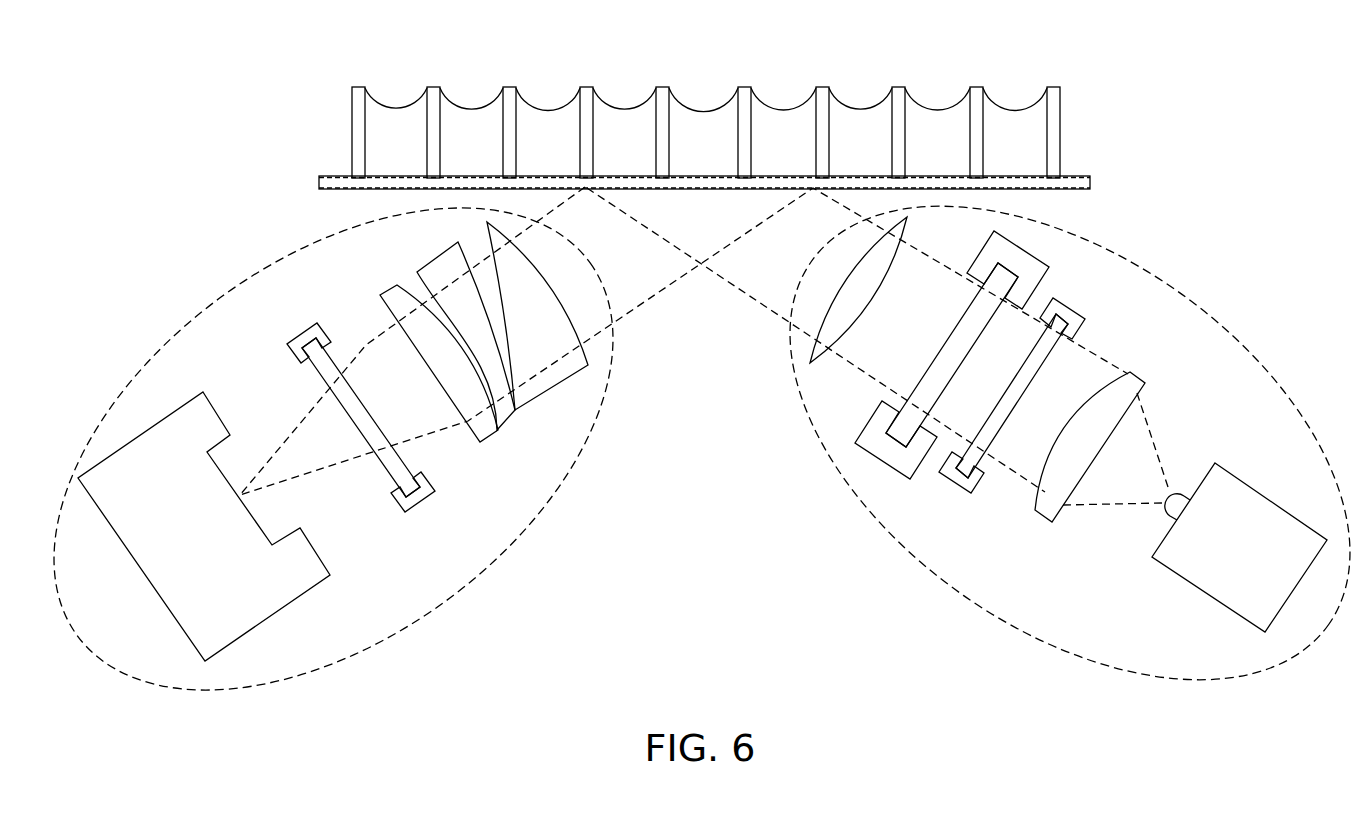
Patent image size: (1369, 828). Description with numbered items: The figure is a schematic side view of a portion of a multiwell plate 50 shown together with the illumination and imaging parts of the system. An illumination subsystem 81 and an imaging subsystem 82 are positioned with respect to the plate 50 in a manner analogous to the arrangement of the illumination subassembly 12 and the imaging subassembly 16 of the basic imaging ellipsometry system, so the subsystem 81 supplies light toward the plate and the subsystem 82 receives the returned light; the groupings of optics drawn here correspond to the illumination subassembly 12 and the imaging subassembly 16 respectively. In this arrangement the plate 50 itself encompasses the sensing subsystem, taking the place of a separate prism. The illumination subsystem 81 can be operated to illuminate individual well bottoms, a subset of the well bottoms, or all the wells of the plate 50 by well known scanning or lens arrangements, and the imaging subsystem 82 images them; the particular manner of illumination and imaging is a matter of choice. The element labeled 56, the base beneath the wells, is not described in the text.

The plate 50 is at (838, 68).
The base plate 56 is at (1073, 207).
The imaging subassembly 16 is at (350, 449).
The illumination subassembly 12 is at (1036, 442).
The imaging subsystem 82 is at (244, 602).
The illumination subsystem 81 is at (1218, 563).